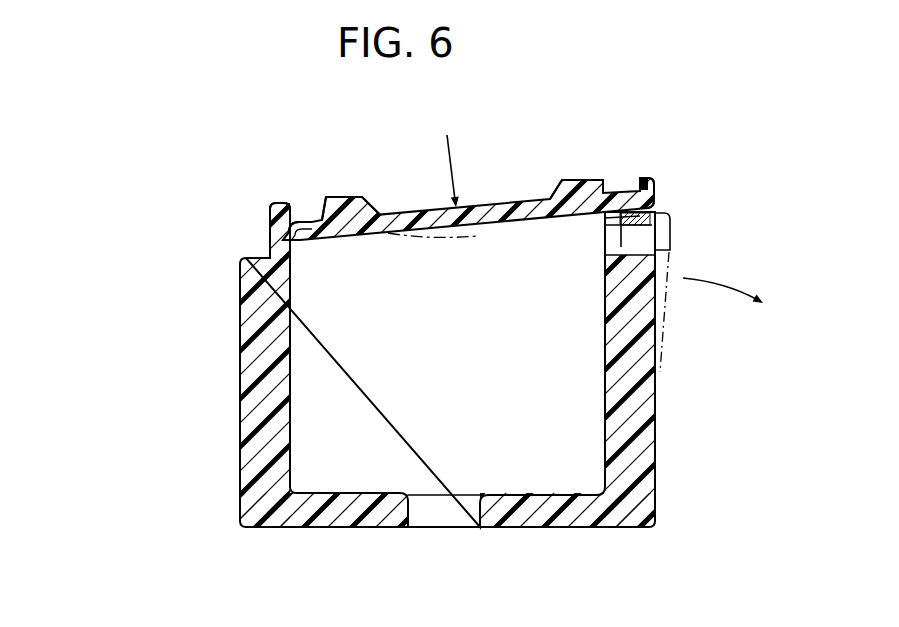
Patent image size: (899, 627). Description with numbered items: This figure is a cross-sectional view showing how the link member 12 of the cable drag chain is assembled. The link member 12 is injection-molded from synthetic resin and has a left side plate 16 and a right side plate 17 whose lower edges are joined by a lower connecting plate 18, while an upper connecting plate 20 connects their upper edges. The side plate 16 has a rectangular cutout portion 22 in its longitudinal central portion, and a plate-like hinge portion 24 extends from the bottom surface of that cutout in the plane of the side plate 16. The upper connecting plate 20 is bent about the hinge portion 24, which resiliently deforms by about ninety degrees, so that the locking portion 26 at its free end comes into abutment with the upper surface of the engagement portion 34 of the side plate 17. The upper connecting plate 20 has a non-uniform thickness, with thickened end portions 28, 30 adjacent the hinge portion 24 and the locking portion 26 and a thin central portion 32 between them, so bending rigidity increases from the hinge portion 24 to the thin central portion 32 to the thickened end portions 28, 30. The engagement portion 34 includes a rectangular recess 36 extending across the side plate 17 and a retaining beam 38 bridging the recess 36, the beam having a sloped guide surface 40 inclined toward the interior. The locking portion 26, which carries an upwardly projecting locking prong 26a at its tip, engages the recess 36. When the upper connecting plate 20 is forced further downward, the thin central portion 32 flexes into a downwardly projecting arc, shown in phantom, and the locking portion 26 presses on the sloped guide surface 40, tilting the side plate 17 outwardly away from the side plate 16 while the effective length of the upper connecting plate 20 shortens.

The link member 12 is at (449, 375).
The side plate 16 is at (273, 416).
The side plate 17 is at (643, 394).
The lower connecting plate 18 is at (349, 515).
The upper connecting plate 20 is at (494, 179).
The rectangular cutout portion 22 is at (254, 260).
The hinge portion 24 is at (304, 222).
The locking portion 26 is at (649, 196).
The locking prong 26a is at (641, 180).
The thickened end portion 28 is at (347, 200).
The thickened end portion 30 is at (578, 193).
The thin central portion 32 is at (494, 205).
The engagement portion 34 is at (598, 240).
The recess 36 is at (650, 250).
The retaining beam 38 is at (643, 216).
The sloped guide surface 40 is at (600, 222).